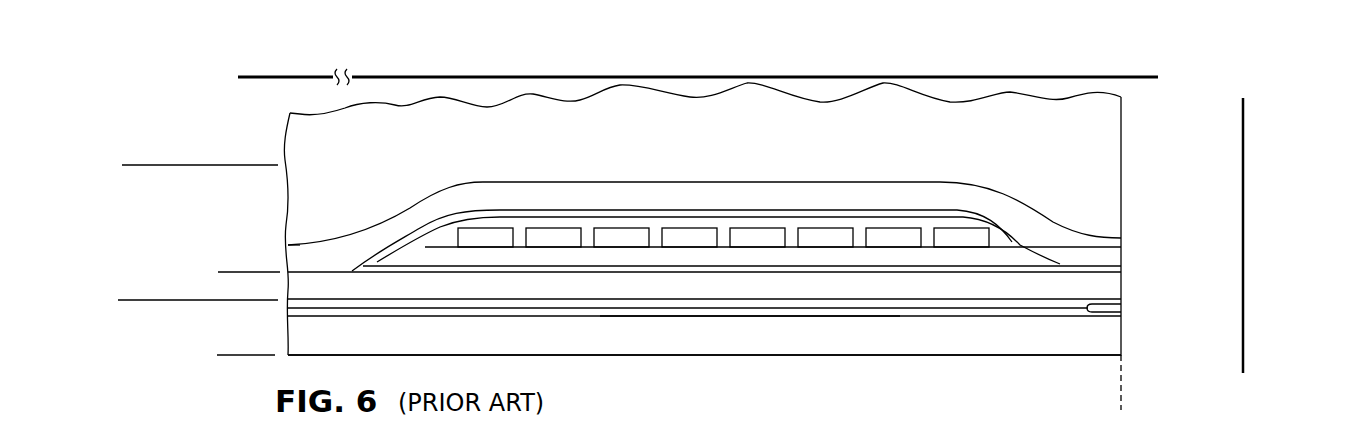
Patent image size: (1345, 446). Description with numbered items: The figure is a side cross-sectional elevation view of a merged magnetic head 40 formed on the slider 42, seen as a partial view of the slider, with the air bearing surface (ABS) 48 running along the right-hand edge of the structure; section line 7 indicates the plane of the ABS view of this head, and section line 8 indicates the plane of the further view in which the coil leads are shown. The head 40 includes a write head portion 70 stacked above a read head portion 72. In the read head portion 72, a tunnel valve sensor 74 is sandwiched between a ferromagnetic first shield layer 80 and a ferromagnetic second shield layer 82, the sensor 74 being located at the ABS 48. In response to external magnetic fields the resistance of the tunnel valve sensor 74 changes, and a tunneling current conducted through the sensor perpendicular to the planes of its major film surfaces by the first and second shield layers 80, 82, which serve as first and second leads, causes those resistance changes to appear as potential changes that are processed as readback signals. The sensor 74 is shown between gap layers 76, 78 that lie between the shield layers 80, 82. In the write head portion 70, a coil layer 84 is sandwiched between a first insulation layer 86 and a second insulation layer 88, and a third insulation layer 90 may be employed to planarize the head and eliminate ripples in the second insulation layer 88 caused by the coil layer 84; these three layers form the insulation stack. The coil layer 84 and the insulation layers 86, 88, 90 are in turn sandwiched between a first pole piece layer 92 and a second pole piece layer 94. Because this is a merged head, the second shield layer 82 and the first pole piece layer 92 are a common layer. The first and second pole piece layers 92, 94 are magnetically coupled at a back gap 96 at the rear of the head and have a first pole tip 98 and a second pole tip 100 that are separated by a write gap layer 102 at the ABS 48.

The section line 7— 7 is at (1259, 106).
The section line 8— 8 is at (244, 32).
The magnetic head 40 is at (262, 121).
The slider 42 is at (1107, 130).
The air bearing surface (ABS) 48 is at (1122, 403).
The write head portion 70 is at (233, 260).
The read head portion 72 is at (233, 369).
The tunnel valve sensor 74 is at (1121, 307).
The first gap layer 76 is at (773, 317).
The second gap layer 78 is at (737, 296).
The first shield layer 80 is at (853, 338).
The second shield layer 82 is at (704, 343).
The coil layer 84 is at (753, 233).
The first insulation layer 86 is at (627, 255).
The second insulation layer 88 is at (1003, 238).
The third insulation layer 90 is at (527, 210).
The first pole piece layer 92 is at (960, 287).
The second pole piece layer 94 is at (866, 192).
The back gap 96 is at (325, 268).
The first pole tip 98 is at (1121, 287).
The second pole tip 100 is at (1115, 245).
The write gap layer 102 is at (1120, 263).